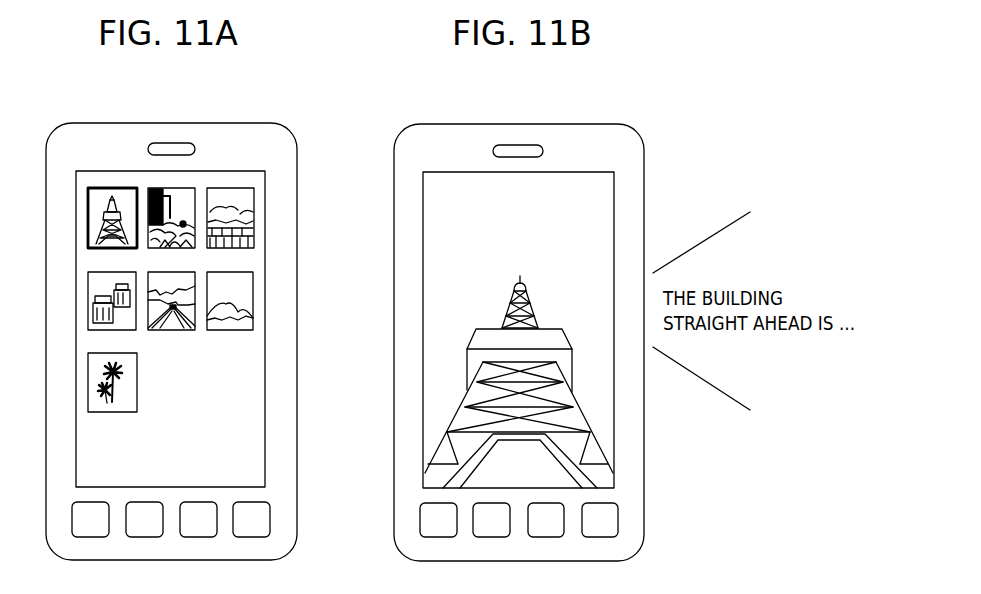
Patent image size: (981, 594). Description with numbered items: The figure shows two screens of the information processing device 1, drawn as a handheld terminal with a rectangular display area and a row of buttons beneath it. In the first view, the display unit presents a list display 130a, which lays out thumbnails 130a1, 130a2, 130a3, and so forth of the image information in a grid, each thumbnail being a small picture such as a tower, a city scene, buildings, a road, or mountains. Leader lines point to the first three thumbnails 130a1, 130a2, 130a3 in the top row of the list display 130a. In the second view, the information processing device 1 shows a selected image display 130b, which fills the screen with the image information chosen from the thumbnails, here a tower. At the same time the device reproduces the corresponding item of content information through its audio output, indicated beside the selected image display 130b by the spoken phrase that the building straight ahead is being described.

In FIG. 11A, the information processing device 1 is at (177, 123).
In FIG. 11B, the information processing device 1 is at (520, 124).
In FIG. 11A, the list display 130a is at (250, 367).
In FIG. 11A, the thumbnail 130a1 is at (110, 190).
In FIG. 11A, the thumbnail 130a2 is at (177, 192).
In FIG. 11A, the thumbnail 130a3 is at (230, 190).
In FIG. 11B, the selected image display 130b is at (610, 200).